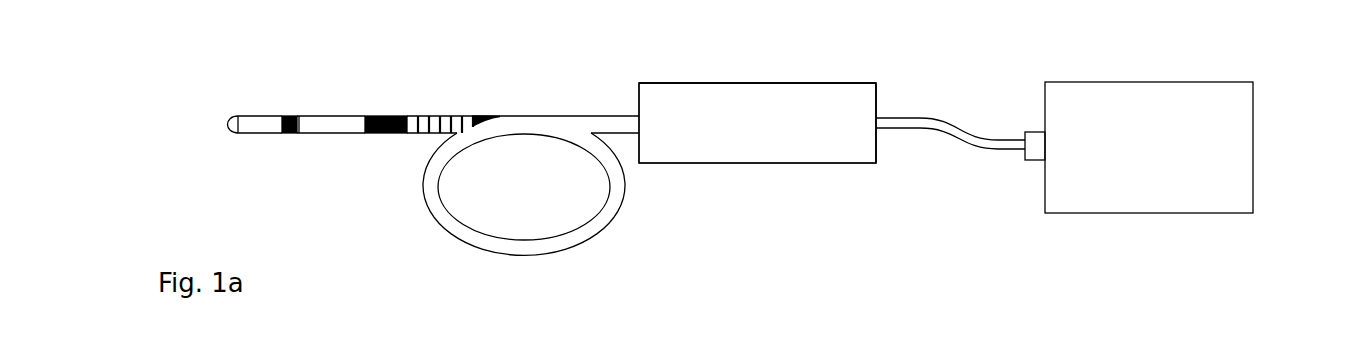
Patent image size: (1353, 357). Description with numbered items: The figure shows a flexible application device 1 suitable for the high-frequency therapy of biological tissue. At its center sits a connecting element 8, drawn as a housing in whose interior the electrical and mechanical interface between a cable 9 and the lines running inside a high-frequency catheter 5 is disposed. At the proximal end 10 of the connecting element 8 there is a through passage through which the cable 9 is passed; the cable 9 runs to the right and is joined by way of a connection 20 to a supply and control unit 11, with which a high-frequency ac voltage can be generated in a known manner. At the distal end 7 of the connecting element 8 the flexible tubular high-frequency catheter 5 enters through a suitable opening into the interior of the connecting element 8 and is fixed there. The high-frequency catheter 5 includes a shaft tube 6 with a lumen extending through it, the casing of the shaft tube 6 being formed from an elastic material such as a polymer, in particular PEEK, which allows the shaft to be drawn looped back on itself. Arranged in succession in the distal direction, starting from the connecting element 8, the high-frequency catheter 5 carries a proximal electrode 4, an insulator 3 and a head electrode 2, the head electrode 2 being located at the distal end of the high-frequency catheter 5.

The application device 1 is at (808, 61).
The head electrode 2 is at (247, 116).
The insulator 3 is at (291, 116).
The proximal electrode 4 is at (355, 116).
The high-frequency catheter 5 is at (468, 90).
The shaft tube 6 is at (618, 116).
The distal end 7 is at (647, 72).
The connecting element 8 is at (715, 83).
The cable 9 is at (963, 127).
The proximal end 10 is at (887, 77).
The supply and control unit 11 is at (1255, 92).
The connection 20 is at (1028, 131).